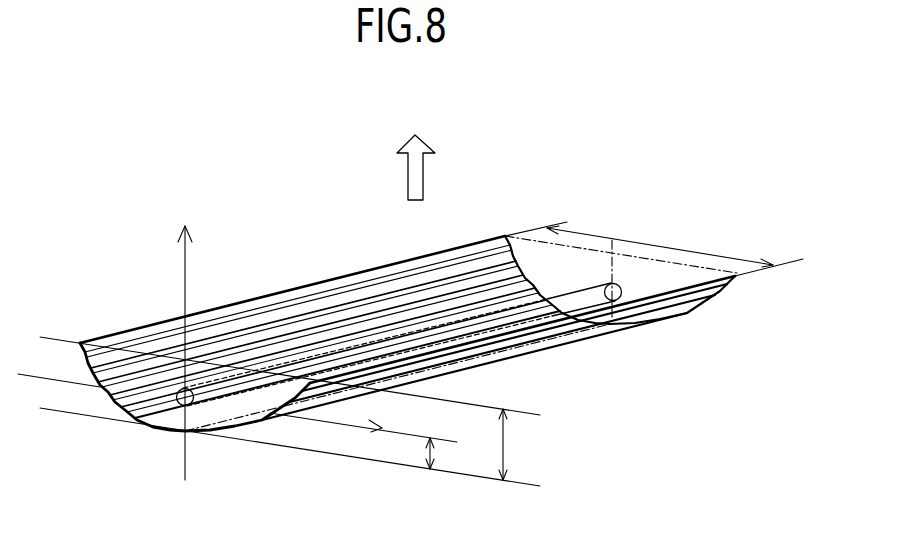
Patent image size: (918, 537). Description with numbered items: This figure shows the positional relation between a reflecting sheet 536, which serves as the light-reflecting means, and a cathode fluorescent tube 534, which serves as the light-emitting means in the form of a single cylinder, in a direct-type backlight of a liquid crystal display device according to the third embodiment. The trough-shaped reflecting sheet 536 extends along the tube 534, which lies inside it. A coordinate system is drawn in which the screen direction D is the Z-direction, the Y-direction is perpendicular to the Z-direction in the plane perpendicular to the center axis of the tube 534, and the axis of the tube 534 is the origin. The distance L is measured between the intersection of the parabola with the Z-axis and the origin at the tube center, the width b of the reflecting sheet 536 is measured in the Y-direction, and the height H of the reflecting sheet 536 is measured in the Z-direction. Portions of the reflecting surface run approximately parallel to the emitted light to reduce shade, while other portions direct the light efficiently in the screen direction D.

The cathode fluorescent tube 534 is at (307, 357).
The reflecting sheet 536 is at (463, 246).
The screen direction D is at (416, 154).
The Z-direction Z is at (175, 353).
The Y-direction Y is at (237, 413).
The height of the reflecting sheet H is at (510, 444).
The distance between parabola intersection and origin L is at (439, 453).
The width of the reflecting sheet b is at (654, 264).